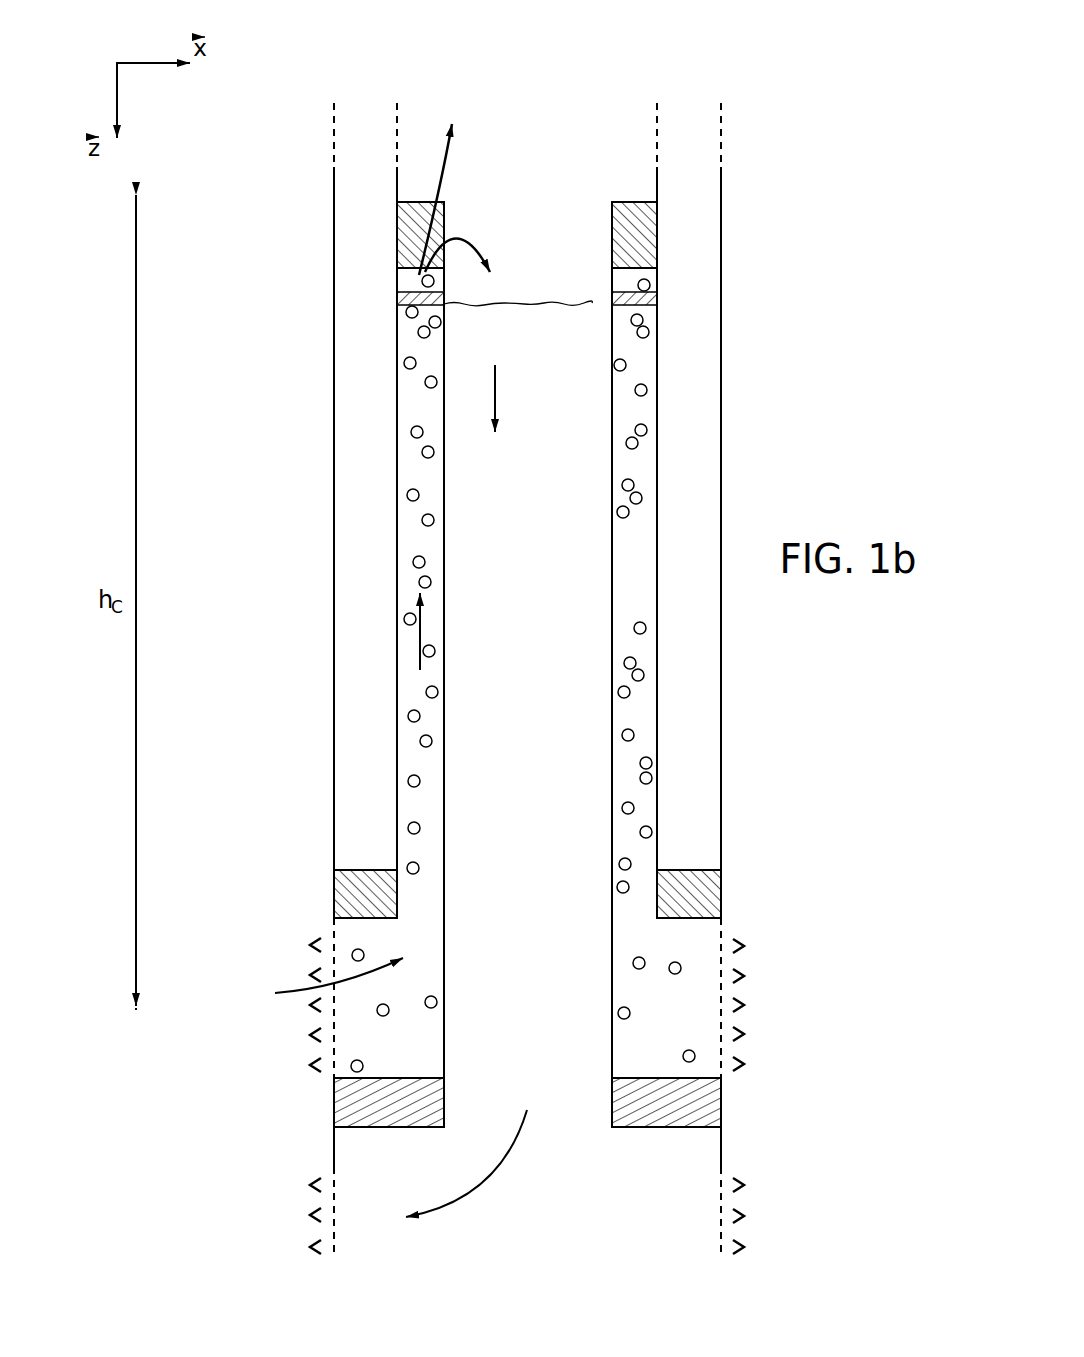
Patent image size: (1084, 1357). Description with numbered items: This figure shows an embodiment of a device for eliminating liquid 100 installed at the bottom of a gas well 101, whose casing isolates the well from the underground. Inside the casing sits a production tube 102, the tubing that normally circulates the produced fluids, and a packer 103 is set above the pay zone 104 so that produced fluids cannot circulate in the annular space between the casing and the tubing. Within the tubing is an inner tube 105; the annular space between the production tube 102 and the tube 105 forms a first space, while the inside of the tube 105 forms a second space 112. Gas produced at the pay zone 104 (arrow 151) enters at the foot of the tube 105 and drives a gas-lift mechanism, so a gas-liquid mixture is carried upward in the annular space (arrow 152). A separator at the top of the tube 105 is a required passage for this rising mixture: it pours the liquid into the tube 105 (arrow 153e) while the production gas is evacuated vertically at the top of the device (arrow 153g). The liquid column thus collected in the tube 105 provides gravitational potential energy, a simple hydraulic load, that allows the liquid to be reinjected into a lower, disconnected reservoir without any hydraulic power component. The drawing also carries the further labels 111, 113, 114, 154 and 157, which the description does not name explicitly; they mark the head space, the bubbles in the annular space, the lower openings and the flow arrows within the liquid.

The device for eliminating liquid 100 is at (323, 90).
The well 101 is at (722, 275).
The production tube 102 is at (658, 338).
The packer 103 is at (693, 895).
The pay zone 104 is at (764, 991).
The tube 105 is at (612, 642).
The gas outlet / head space 111 is at (588, 132).
The second space 112 is at (586, 404).
The gas bubbles in annular channel 113 is at (648, 439).
The bottom openings 114 is at (764, 1201).
The production of gas 151 is at (285, 993).
The mixture driven towards the top 152 is at (420, 637).
The pouring of the liquid 153e is at (443, 288).
The evacuation of the production gas 153g is at (430, 175).
The downward liquid flow 154 is at (493, 401).
The bottom recirculation flow 157 is at (447, 1198).